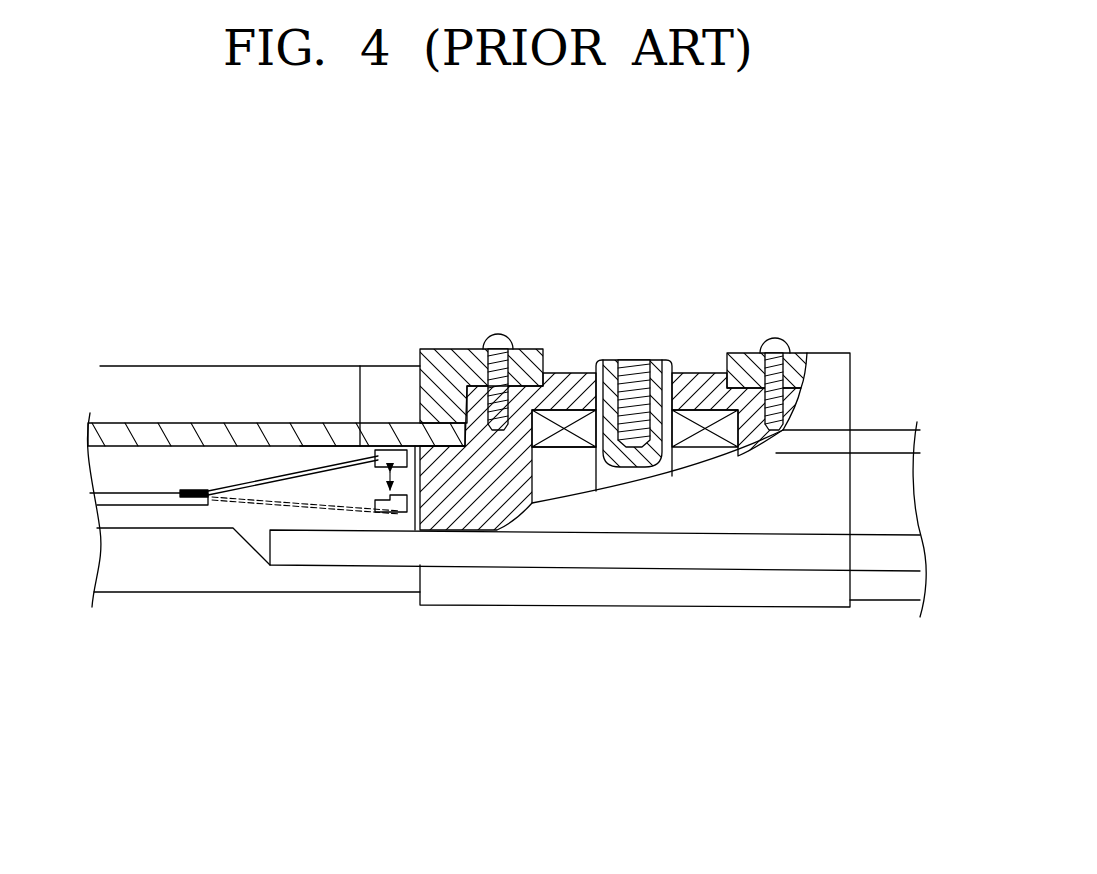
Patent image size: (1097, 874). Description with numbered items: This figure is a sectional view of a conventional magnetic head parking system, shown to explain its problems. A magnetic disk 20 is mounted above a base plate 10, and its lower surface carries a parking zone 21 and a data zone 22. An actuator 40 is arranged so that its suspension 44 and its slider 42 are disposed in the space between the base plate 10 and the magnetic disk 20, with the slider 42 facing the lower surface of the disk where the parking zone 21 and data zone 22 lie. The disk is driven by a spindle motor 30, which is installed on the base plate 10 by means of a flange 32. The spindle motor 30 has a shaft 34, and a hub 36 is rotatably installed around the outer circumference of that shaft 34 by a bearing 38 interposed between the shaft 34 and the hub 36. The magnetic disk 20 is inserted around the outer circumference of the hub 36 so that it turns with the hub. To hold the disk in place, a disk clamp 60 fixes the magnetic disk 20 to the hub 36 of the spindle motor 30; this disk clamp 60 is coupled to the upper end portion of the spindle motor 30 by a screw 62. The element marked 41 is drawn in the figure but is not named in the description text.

The base plate 10 is at (197, 580).
The magnetic disk 20 is at (89, 412).
The parking zone 21 is at (390, 366).
The data zone 22 is at (232, 366).
The spindle motor 30 is at (584, 628).
The flange 32 is at (398, 553).
The shaft 34 is at (660, 362).
The hub 36 is at (472, 515).
The bearing 38 is at (571, 420).
The actuator 40 is at (182, 520).
The contact surface 41 is at (313, 430).
The slider 42 is at (382, 466).
The suspension 44 is at (244, 492).
The disk clamp 60 is at (454, 349).
The screw 62 is at (498, 337).